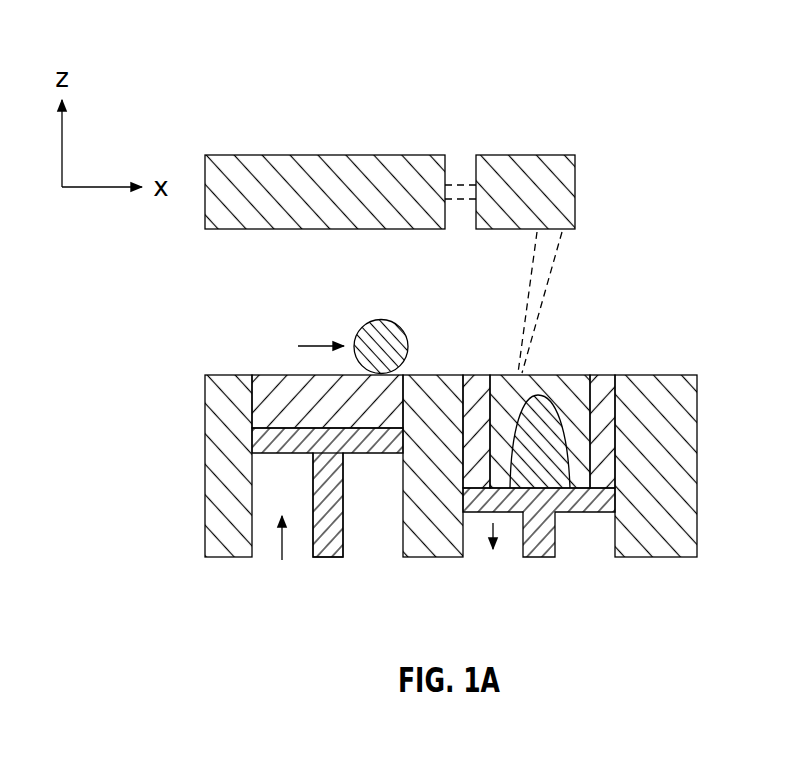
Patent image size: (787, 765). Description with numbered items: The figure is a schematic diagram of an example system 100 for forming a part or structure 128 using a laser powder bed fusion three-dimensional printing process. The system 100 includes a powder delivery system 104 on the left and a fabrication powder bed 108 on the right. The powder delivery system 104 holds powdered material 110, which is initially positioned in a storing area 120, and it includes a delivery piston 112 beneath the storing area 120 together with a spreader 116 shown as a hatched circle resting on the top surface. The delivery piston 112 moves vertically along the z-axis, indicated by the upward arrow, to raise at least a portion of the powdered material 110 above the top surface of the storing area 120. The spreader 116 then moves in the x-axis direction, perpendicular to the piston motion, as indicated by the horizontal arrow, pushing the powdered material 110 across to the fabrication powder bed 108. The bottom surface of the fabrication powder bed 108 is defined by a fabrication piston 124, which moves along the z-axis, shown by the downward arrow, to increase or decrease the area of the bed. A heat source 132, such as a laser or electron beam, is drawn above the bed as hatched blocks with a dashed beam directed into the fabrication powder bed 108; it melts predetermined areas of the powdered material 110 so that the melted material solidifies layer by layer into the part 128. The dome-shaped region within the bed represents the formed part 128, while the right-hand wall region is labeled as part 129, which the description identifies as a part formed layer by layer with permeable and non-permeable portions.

The system 100 is at (697, 83).
The heat source 132 is at (314, 168).
The fabrication powder bed 108 is at (569, 282).
The spreader 116 is at (361, 320).
The storing area 120 is at (262, 405).
The powdered material 110 is at (307, 415).
The powder delivery system 104 is at (195, 439).
The part 129 is at (699, 466).
The part or structure 128 is at (588, 407).
The delivery piston 112 is at (325, 550).
The fabrication piston 124 is at (531, 557).